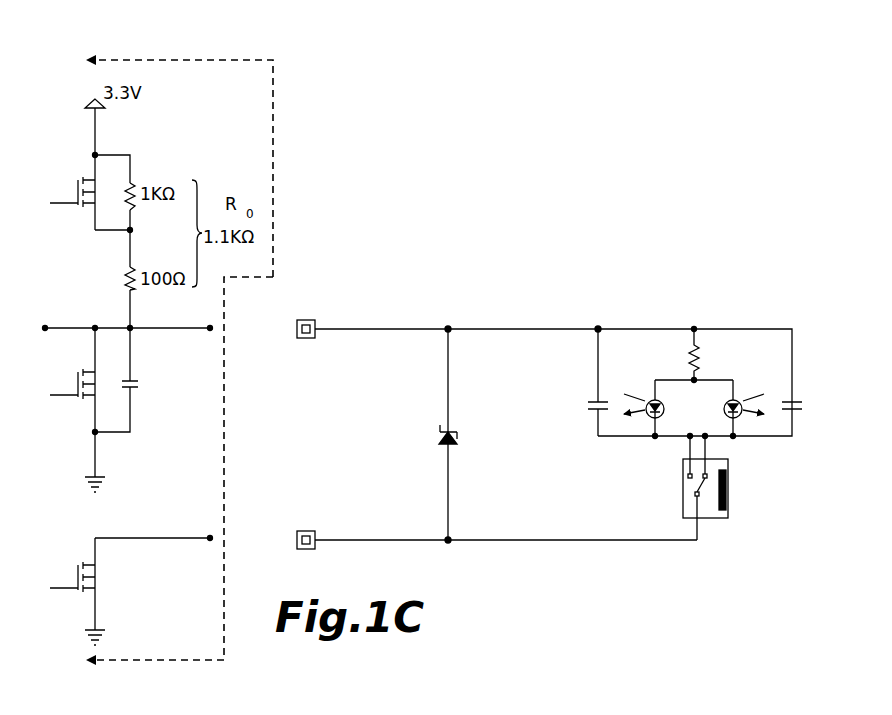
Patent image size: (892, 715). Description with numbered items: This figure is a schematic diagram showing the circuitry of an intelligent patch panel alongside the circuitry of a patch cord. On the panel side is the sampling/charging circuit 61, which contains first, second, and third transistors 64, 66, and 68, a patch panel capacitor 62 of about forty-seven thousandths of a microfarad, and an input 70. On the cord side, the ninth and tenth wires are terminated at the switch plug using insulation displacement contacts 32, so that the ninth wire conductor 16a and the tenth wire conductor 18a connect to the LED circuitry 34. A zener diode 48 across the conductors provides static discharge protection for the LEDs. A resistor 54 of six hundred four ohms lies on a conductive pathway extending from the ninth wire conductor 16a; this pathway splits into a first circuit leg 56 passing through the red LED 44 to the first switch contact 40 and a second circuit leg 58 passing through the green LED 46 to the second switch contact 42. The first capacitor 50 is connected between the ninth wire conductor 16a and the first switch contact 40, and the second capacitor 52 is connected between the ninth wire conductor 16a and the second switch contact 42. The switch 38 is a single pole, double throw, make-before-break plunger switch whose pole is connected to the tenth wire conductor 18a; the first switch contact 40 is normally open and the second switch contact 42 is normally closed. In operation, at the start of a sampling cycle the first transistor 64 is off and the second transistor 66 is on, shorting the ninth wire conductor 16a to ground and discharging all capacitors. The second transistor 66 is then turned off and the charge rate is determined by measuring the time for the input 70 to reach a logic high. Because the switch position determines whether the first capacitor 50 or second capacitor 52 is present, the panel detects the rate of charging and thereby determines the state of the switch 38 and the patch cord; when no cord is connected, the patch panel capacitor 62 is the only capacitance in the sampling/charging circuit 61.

The sampling/charging circuit 61 is at (66, 80).
The first transistor 64 is at (66, 188).
The second transistor 66 is at (64, 426).
The third transistor 68 is at (64, 572).
The input 70 is at (45, 326).
The patch panel capacitor 62 is at (140, 386).
The insulation displacement contacts 32 is at (309, 318).
The ninth wire conductor 16a is at (376, 327).
The tenth wire conductor 18a is at (376, 538).
The zener diode 48 is at (440, 437).
The LED circuitry 34 is at (608, 318).
The first capacitor 50 is at (590, 402).
The second capacitor 52 is at (798, 402).
The resistor 54 is at (690, 350).
The first circuit leg 56 is at (668, 378).
The second circuit leg 58 is at (723, 378).
The red LED 44 is at (648, 401).
The green LED 46 is at (742, 401).
The switch 38 is at (710, 500).
The first switch contact 40 is at (688, 477).
The second switch contact 42 is at (727, 478).